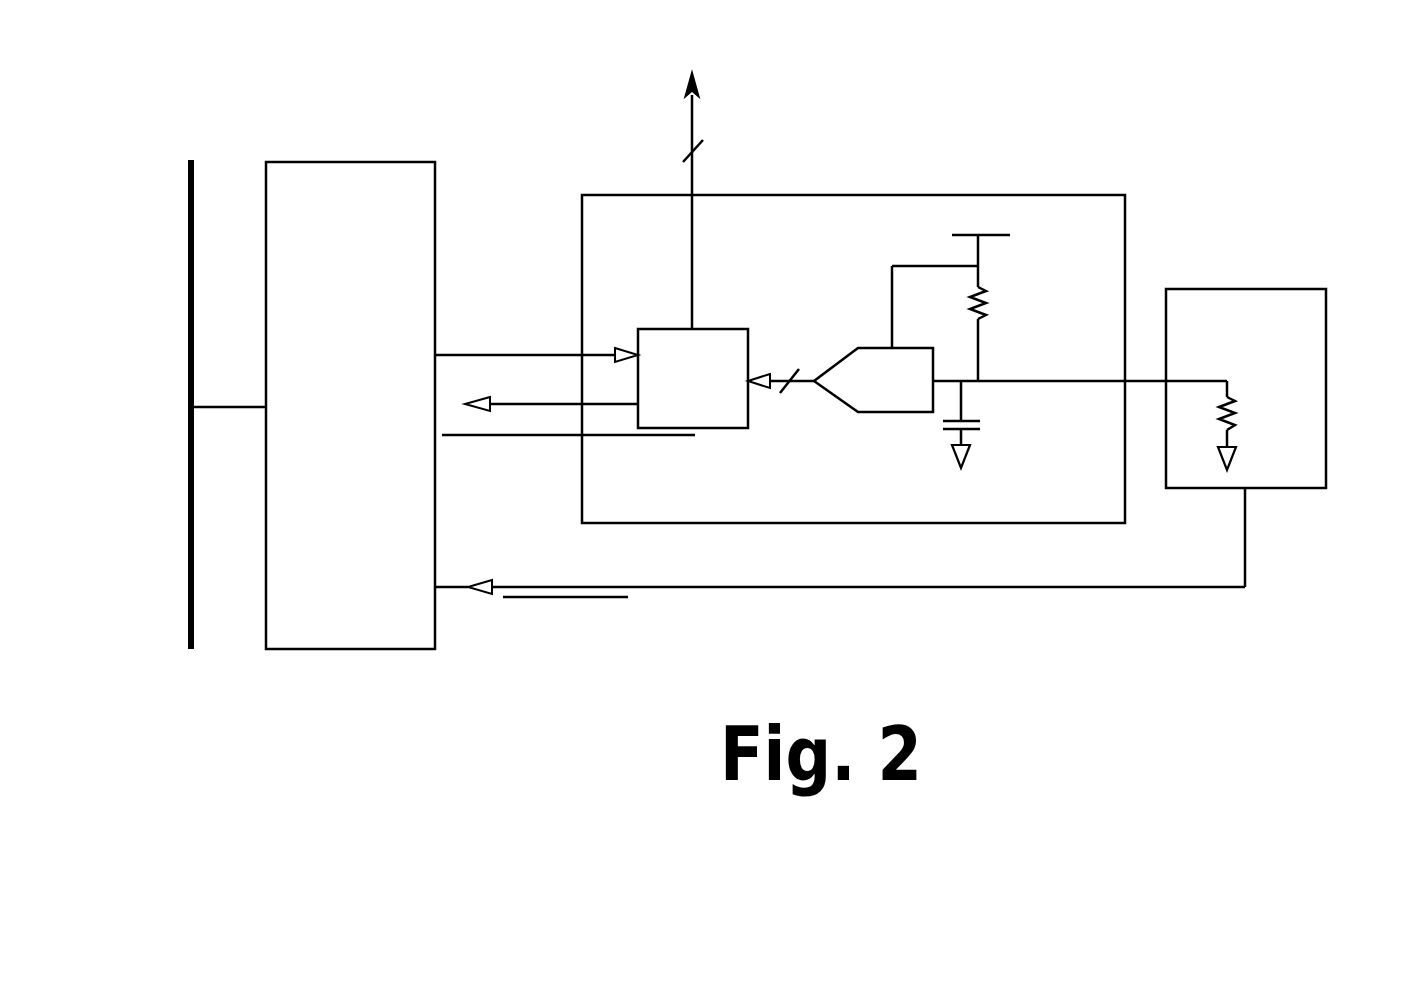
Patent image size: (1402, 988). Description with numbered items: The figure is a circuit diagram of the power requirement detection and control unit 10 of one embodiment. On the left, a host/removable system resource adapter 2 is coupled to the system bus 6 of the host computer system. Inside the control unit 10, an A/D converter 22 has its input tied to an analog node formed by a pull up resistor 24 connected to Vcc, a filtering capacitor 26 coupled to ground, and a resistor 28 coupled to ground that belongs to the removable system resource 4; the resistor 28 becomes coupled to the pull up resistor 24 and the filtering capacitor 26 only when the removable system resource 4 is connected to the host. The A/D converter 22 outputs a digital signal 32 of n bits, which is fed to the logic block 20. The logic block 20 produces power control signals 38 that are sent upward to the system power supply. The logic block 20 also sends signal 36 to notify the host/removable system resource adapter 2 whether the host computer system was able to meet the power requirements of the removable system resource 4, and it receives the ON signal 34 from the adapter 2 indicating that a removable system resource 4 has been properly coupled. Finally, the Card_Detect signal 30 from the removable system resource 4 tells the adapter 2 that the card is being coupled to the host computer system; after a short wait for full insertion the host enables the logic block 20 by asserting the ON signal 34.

The host/removable system resource adapter 2 is at (350, 392).
The removable system resource 4 is at (1262, 388).
The system bus 6 is at (180, 404).
The power requirement detection and control unit 10 is at (853, 359).
The logic block 20 is at (743, 329).
The A/D converter 22 is at (896, 354).
The pull up resistor 24 is at (980, 294).
The filtering capacitor 26 is at (967, 424).
The resistor 28 is at (1228, 425).
The Card_Detect signal 30 is at (840, 558).
The digital signal 32 is at (781, 377).
The ON signal 34 is at (536, 346).
The signal 36 is at (538, 432).
The power control signals 38 is at (698, 184).